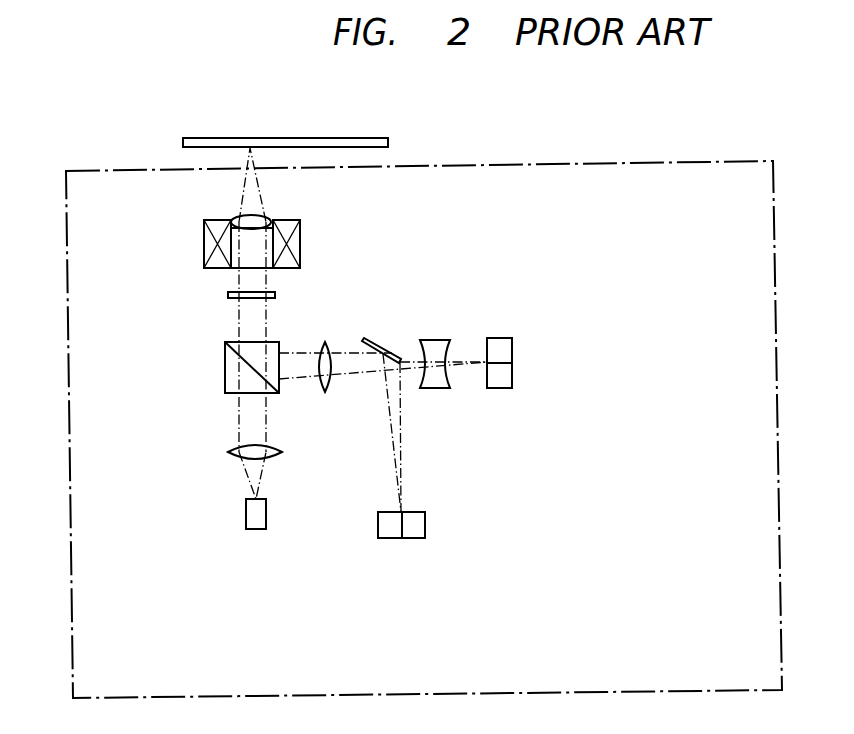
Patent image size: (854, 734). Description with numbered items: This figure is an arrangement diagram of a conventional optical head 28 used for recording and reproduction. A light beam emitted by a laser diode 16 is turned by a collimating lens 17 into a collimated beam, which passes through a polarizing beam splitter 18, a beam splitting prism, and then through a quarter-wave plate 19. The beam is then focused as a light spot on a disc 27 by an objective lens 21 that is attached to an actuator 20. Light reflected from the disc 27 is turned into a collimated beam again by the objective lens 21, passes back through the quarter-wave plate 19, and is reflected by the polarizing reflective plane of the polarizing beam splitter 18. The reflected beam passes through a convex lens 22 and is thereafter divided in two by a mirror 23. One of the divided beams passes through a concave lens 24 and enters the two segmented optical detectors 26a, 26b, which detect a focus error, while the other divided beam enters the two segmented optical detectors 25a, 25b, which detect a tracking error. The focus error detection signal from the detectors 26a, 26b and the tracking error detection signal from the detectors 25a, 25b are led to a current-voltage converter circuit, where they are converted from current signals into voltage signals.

The laser diode 16 is at (246, 518).
The collimating lens 17 is at (228, 454).
The polarizing beam splitter 18 is at (225, 367).
The quarter-wave plate 19 is at (228, 296).
The actuator 20 is at (204, 245).
The objective lens 21 is at (268, 216).
The convex lens 22 is at (325, 395).
The mirror 23 is at (383, 342).
The concave lens 24 is at (436, 340).
The two segmented optical detector for detecting a tracking error 25a is at (390, 540).
The two segmented optical detector for detecting a tracking error 25b is at (412, 540).
The two segmented optical detector for detecting a focus error 26a is at (513, 348).
The two segmented optical detector for detecting a focus error 26b is at (513, 373).
The disc 27 is at (199, 138).
The optical head 28 is at (640, 162).